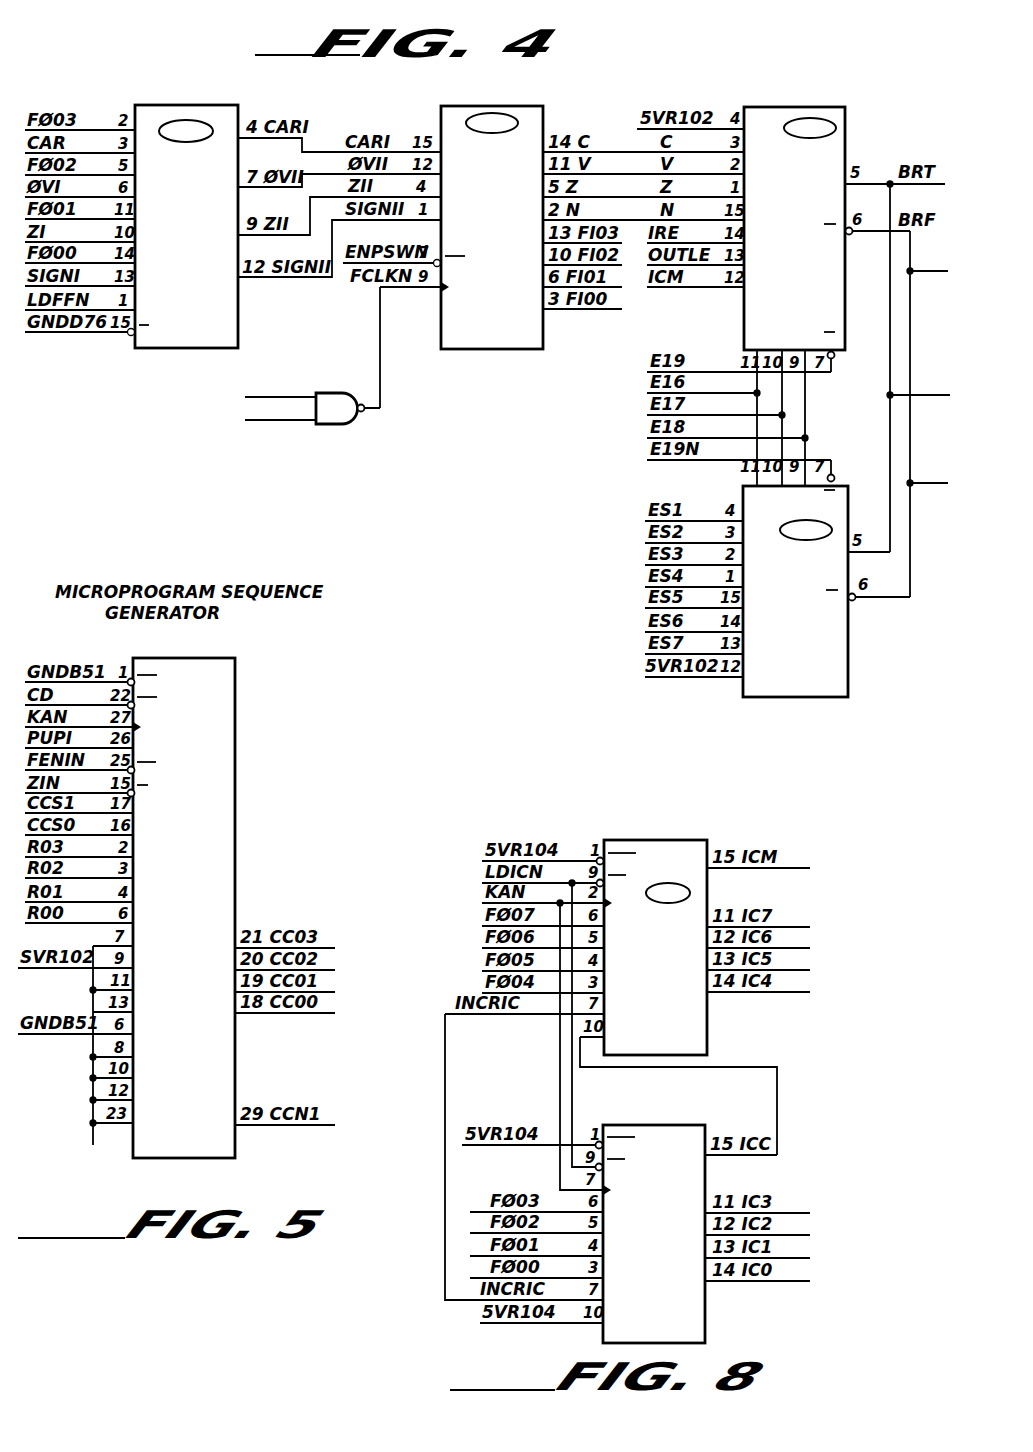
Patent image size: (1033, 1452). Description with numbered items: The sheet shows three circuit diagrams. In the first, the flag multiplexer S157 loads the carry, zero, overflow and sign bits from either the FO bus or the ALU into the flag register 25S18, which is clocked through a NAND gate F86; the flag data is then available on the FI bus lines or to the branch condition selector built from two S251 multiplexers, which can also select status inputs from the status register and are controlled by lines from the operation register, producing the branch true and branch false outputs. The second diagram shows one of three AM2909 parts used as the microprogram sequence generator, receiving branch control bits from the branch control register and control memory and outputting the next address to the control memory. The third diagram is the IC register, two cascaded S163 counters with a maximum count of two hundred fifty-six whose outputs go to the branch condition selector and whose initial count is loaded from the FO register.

In FIG. 4, the flag multiplexer part S157 is at (180, 228).
In FIG. 4, the flag register part 25S18 is at (490, 238).
In FIG. 4, the NAND gate F86 is at (317, 413).
In FIG. 4, the branch condition selector part S251 is at (799, 414).
In FIG. 5, the microprogram sequence generator part AM2909 is at (183, 894).
In FIG. 8, the instruction counter part S163 is at (741, 1081).